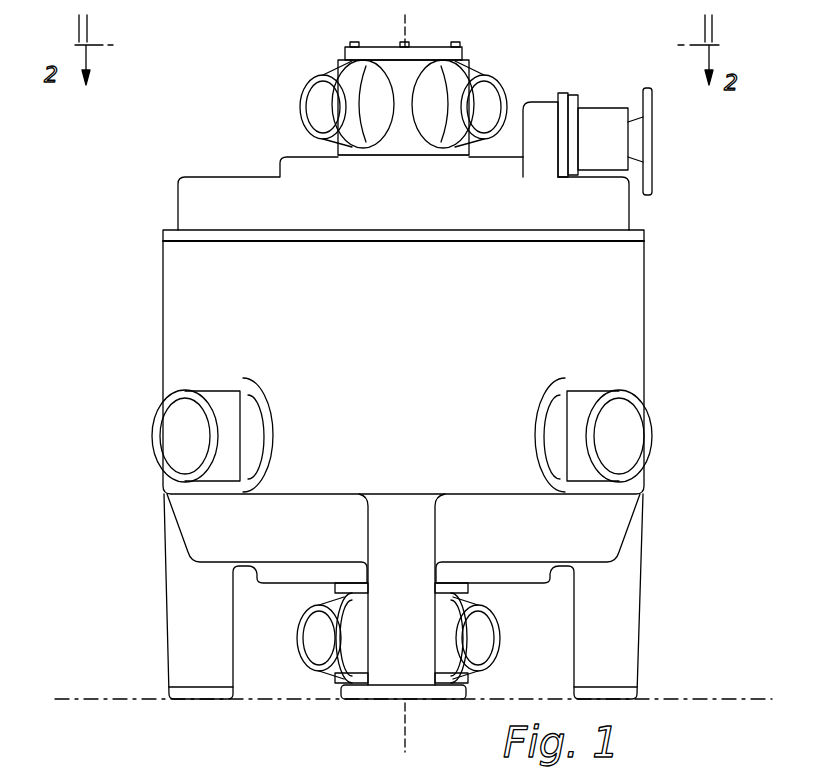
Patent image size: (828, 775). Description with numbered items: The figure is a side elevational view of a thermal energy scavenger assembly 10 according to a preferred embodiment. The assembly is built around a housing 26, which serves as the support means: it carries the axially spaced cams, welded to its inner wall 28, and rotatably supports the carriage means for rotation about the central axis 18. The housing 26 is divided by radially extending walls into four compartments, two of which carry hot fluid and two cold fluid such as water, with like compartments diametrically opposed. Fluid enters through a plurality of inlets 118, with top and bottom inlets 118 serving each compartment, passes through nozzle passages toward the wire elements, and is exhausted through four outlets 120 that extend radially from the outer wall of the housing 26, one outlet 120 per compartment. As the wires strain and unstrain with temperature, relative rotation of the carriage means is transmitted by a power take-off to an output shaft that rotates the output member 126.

The thermal energy scavenger assembly 10 is at (386, 380).
The central axis 18 is at (405, 28).
The housing 26 is at (647, 335).
The inner wall 28 is at (410, 73).
The inlets 118 is at (305, 86).
The outlets 120 is at (152, 424).
The output member 126 is at (650, 88).